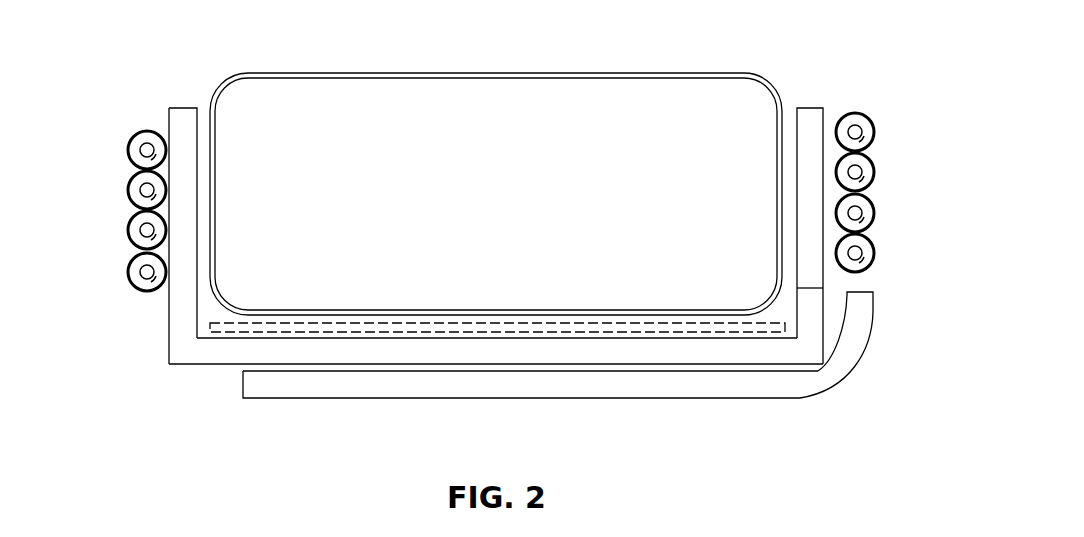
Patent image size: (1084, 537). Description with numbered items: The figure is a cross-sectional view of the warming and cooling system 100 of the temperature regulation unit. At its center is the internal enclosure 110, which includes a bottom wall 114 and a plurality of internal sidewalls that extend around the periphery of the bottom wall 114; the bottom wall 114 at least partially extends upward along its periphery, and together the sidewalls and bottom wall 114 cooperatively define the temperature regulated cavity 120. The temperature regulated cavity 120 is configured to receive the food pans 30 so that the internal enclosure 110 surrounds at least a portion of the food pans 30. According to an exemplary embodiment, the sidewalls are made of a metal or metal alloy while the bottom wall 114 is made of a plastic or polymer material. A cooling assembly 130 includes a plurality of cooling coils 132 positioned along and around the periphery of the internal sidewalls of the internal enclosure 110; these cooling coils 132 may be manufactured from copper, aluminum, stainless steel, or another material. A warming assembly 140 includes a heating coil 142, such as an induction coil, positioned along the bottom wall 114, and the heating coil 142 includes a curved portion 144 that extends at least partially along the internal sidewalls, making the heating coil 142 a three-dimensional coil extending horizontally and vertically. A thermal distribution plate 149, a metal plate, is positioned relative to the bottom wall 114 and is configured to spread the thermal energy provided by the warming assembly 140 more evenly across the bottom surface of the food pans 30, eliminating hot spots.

The warming and cooling system 100 is at (123, 105).
The food pans 30 is at (512, 208).
The internal enclosure 110 is at (195, 188).
The bottom wall 114 is at (210, 358).
The temperature regulated cavity 120 is at (805, 188).
The cooling assembly 130 is at (500, 210).
The cooling coils 132 is at (130, 230).
The warming assembly 140 is at (592, 393).
The heating coil 142 is at (543, 390).
The curved portion 144 is at (853, 338).
The thermal distribution plate 149 is at (348, 327).